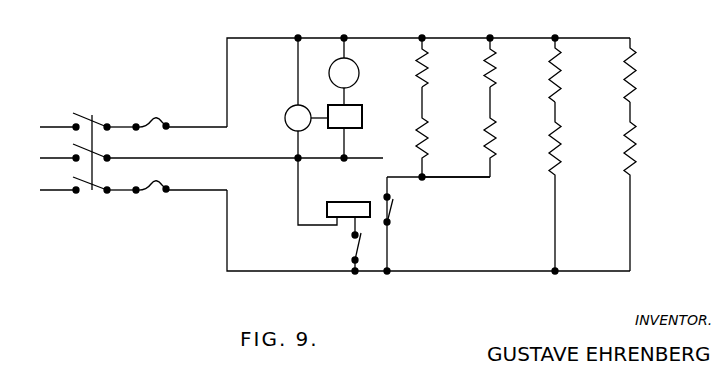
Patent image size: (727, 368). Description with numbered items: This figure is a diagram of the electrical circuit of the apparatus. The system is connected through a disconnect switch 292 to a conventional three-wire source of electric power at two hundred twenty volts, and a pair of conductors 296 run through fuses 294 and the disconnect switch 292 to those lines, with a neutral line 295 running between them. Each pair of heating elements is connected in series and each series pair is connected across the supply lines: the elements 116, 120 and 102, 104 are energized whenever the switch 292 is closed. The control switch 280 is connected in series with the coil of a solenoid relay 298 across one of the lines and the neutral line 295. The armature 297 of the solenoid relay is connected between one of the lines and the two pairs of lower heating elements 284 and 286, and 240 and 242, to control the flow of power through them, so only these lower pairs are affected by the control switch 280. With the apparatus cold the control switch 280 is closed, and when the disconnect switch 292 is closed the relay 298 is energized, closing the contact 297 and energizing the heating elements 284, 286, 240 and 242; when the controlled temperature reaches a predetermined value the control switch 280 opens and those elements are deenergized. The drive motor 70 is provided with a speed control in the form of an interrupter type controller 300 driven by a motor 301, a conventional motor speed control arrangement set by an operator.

The drive motor 70 is at (358, 68).
The heating element 102 is at (641, 83).
The heating element 104 is at (642, 150).
The heating element 116 is at (562, 83).
The heating element 120 is at (564, 150).
The lower heating element 240 is at (497, 79).
The lower heating element 242 is at (498, 149).
The control switch 280 is at (353, 251).
The lower heating element 284 is at (428, 82).
The lower heating element 286 is at (429, 148).
The disconnect switch 292 is at (96, 116).
The fuses 294 is at (153, 120).
The neutral line 295 is at (219, 158).
The conductors 296 is at (227, 78).
The armature 297 is at (393, 212).
The solenoid relay 298 is at (345, 202).
The interrupter type controller 300 is at (362, 113).
The motor 301 is at (286, 118).